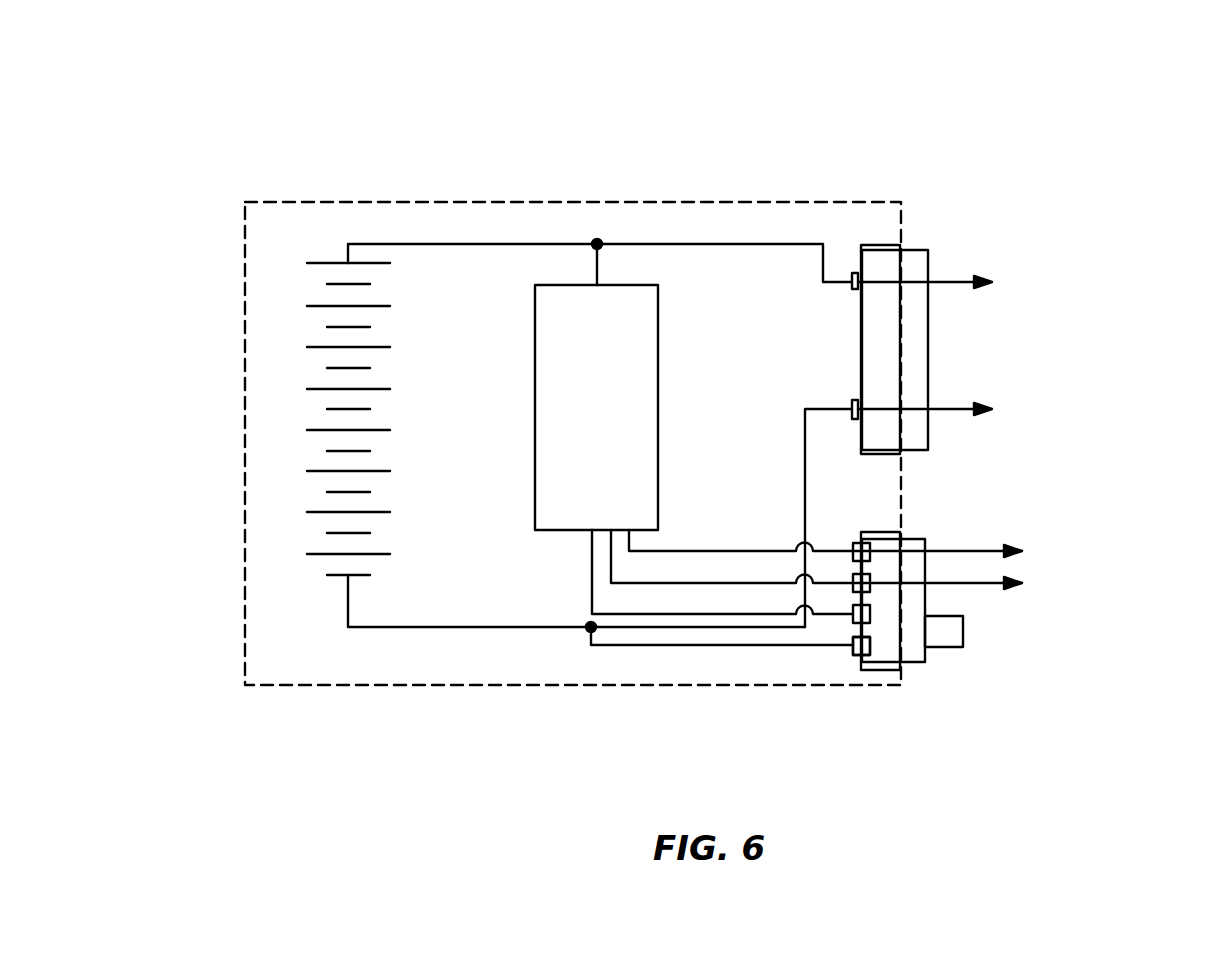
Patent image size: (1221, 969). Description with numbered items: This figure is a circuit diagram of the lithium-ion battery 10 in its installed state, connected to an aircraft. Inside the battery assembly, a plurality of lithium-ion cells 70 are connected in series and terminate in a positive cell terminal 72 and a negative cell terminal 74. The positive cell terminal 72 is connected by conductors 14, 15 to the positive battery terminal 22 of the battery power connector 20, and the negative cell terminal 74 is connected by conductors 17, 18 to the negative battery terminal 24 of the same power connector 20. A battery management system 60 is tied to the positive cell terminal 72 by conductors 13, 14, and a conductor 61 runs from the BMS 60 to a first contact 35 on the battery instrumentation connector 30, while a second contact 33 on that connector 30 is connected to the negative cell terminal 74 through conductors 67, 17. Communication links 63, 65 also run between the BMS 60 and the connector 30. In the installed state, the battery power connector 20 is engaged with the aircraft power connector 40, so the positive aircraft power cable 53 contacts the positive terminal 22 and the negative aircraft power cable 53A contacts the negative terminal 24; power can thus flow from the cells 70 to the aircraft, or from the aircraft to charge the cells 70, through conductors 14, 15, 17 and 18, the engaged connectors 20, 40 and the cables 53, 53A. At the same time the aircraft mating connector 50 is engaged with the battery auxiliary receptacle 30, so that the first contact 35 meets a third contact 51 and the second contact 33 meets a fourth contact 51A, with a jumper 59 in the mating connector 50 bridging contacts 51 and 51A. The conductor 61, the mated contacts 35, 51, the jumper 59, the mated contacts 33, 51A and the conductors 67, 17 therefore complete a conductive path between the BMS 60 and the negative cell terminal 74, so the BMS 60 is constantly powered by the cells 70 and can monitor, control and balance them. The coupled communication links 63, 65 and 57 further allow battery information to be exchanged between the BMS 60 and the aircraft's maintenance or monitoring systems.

The battery 10 is at (892, 88).
The conductor 13 is at (597, 270).
The conductor 14 is at (466, 244).
The conductor 15 is at (700, 244).
The conductor 17 is at (430, 627).
The conductor 18 is at (804, 433).
The battery power connector 20 is at (880, 245).
The positive battery terminal 22 is at (852, 287).
The negative battery terminal 24 is at (852, 405).
The battery instrumentation connector 30 is at (883, 532).
The second contact 33 is at (860, 645).
The first contact 35 is at (857, 612).
The aircraft power connector 40 is at (912, 250).
The aircraft mating connector 50 is at (913, 539).
The third contact 51 is at (865, 615).
The fourth contact 51A is at (863, 648).
The positive aircraft power cable 53 is at (955, 281).
The negative aircraft power cable 53A is at (947, 409).
The communication link 57 is at (975, 583).
The jumper 59 is at (963, 632).
The battery management system 60 is at (596, 407).
The conductor 61 is at (689, 614).
The communication link 63 is at (730, 551).
The communication link 65 is at (708, 583).
The conductor 67 is at (755, 645).
The lithium-ion cells 70 is at (312, 439).
The positive cell terminal 72 is at (345, 263).
The negative cell terminal 74 is at (348, 577).